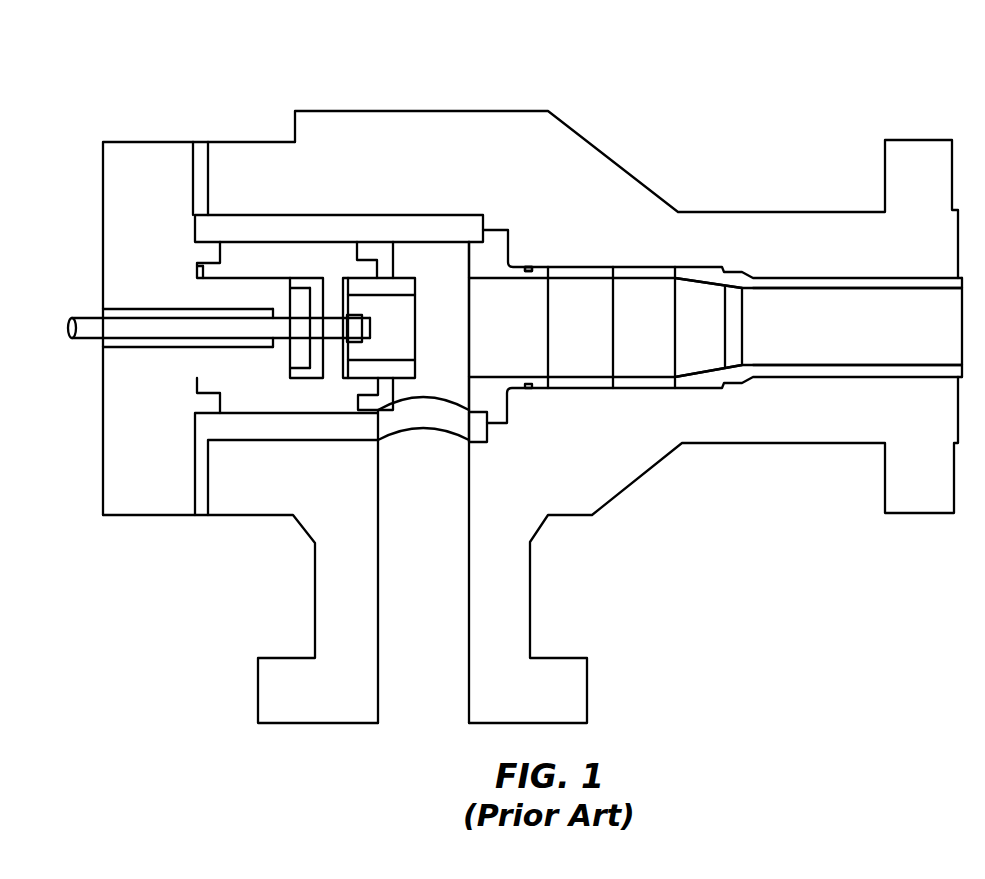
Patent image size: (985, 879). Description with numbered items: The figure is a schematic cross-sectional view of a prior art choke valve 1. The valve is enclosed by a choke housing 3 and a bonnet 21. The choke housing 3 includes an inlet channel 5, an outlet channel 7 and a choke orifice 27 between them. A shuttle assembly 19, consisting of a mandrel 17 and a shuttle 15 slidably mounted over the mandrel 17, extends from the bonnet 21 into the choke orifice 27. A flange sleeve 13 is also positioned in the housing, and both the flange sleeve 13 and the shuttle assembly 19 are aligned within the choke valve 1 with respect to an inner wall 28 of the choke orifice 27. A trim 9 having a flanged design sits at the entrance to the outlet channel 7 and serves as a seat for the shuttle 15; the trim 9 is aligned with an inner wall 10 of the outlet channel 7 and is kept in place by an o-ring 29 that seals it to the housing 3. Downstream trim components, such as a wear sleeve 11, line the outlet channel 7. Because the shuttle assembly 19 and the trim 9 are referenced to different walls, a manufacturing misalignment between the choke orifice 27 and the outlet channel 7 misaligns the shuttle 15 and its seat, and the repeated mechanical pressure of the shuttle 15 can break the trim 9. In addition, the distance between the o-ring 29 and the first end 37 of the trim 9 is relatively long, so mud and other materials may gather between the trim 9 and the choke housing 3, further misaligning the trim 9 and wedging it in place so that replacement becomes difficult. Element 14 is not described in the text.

The choke valve 1 is at (176, 58).
The choke housing 3 is at (445, 110).
The inlet channel 5 is at (434, 604).
The outlet channel 7 is at (866, 341).
The trim 9 is at (499, 405).
The inner wall 10 is at (662, 384).
The wear sleeve 11 is at (633, 383).
The flange sleeve 13 is at (287, 222).
The disk 14 is at (428, 424).
The shuttle 15 is at (367, 370).
The mandrel 17 is at (85, 318).
The shuttle assembly 19 is at (298, 402).
The bonnet 21 is at (145, 152).
The choke orifice 27 is at (458, 341).
The inner wall 28 is at (413, 247).
The o-ring 29 is at (530, 266).
The first end 37 is at (470, 258).